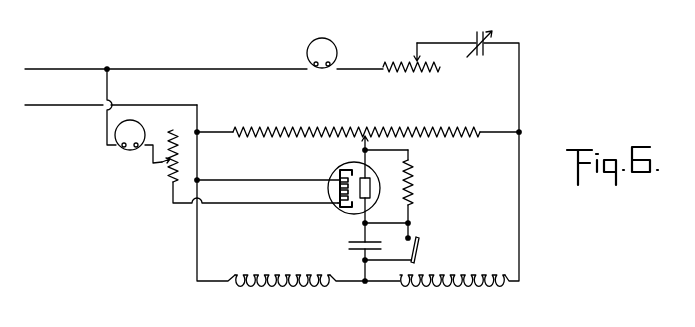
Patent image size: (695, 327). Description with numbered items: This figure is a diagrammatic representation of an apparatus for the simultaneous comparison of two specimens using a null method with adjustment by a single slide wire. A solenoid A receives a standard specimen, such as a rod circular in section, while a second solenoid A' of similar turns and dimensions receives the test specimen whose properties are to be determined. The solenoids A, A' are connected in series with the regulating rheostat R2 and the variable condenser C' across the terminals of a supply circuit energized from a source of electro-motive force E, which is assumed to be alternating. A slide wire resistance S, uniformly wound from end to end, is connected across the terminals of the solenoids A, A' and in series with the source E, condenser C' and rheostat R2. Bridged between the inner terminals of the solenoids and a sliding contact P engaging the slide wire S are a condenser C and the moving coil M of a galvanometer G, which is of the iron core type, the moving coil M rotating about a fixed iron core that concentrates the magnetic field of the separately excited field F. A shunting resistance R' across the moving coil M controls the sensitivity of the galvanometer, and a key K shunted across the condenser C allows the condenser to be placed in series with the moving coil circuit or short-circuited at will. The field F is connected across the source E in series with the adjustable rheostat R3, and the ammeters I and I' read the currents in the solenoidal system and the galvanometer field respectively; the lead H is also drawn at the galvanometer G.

The source of electro-motive force E is at (204, 106).
The ammeter I is at (328, 44).
The ammeter I' is at (128, 148).
The regulating rheostat R2 is at (425, 71).
The adjustable rheostat R3 is at (168, 170).
The variable condenser C' is at (473, 32).
The slide wire resistance S is at (345, 126).
The sliding contact P is at (373, 130).
The galvanometer G is at (346, 218).
The separately excited field F is at (337, 176).
The filament lead H is at (337, 207).
The moving coil M is at (371, 187).
The shunting resistance R' is at (414, 194).
The key K is at (420, 244).
The condenser C is at (353, 261).
The solenoid A is at (282, 269).
The second solenoid A' is at (452, 267).